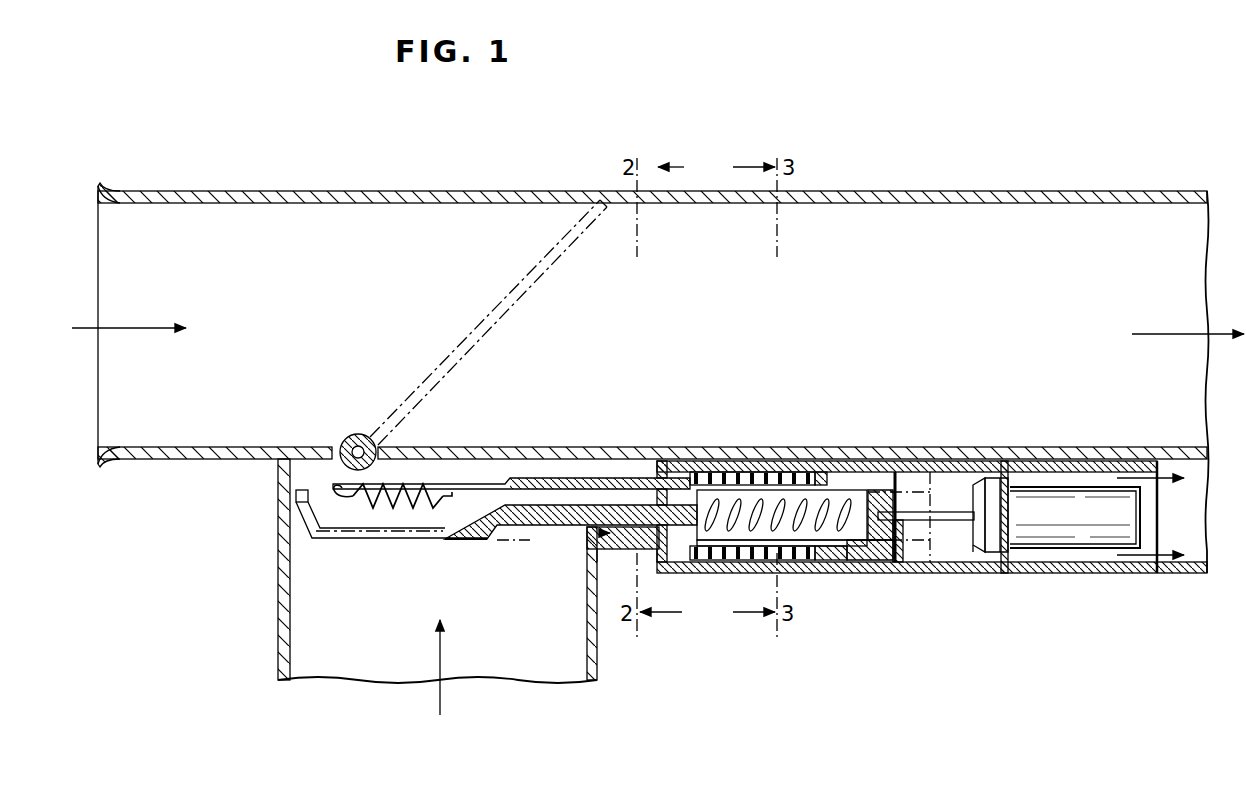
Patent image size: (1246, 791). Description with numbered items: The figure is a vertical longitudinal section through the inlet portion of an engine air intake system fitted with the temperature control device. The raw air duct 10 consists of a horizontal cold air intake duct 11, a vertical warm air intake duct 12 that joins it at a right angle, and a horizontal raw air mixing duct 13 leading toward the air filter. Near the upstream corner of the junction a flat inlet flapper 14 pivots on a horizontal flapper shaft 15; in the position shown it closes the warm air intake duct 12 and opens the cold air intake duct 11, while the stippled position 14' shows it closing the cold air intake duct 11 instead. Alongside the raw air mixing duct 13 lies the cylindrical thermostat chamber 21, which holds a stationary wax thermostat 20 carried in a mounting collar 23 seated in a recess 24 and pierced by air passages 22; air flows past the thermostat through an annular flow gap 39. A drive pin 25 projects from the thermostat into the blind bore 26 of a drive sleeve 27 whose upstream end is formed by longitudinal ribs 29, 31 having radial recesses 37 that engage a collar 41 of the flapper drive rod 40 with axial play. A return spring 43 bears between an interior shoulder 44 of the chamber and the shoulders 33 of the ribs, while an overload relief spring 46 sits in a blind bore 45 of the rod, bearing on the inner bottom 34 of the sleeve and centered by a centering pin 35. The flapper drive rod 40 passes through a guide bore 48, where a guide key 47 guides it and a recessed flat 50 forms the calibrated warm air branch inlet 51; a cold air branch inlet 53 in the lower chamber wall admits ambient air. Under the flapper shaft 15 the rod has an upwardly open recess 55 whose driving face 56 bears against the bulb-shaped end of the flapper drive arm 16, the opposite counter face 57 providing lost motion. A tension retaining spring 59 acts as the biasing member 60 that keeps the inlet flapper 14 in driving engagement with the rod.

The raw air duct 10 is at (703, 189).
The cold air intake duct 11 is at (178, 237).
The warm air intake duct 12 is at (325, 646).
The raw air mixing duct 13 is at (1127, 225).
The inlet flapper 14 is at (652, 412).
The inlet flapper other end position 14' is at (488, 322).
The flapper shaft 15 is at (350, 438).
The flapper drive arm 16 is at (332, 487).
The wax thermostat 20 is at (1100, 507).
The thermostat chamber 21 is at (1063, 477).
The air passages 22 is at (1010, 482).
The mounting collar 23 is at (1005, 572).
The recess 24 is at (1004, 466).
The drive pin 25 is at (947, 511).
The blind bore 26 is at (897, 563).
The drive sleeve 27 is at (902, 486).
The longitudinal rib 29 is at (800, 492).
The longitudinal rib 31 is at (740, 545).
The shoulders 33 is at (845, 488).
The inner bottom 34 is at (860, 562).
The centering pin 35 is at (869, 492).
The radial recesses 37 is at (818, 561).
The annular flow gap 39 is at (986, 477).
The flapper drive rod 40 is at (479, 543).
The collar 41 is at (762, 548).
The return spring 43 is at (680, 463).
The interior shoulder 44 is at (658, 461).
The blind bore 45 is at (765, 487).
The overload relief spring 46 is at (727, 473).
The guide key 47 is at (575, 478).
The guide bore 48 is at (645, 548).
The recessed flat 50 is at (553, 530).
The warm air branch inlet 51 is at (624, 540).
The cold air branch inlet 53 is at (962, 548).
The recess 55 is at (391, 488).
The driving face 56 is at (361, 508).
The counter face 57 is at (296, 497).
The retaining spring 59 is at (425, 510).
The biasing member 60 is at (436, 466).